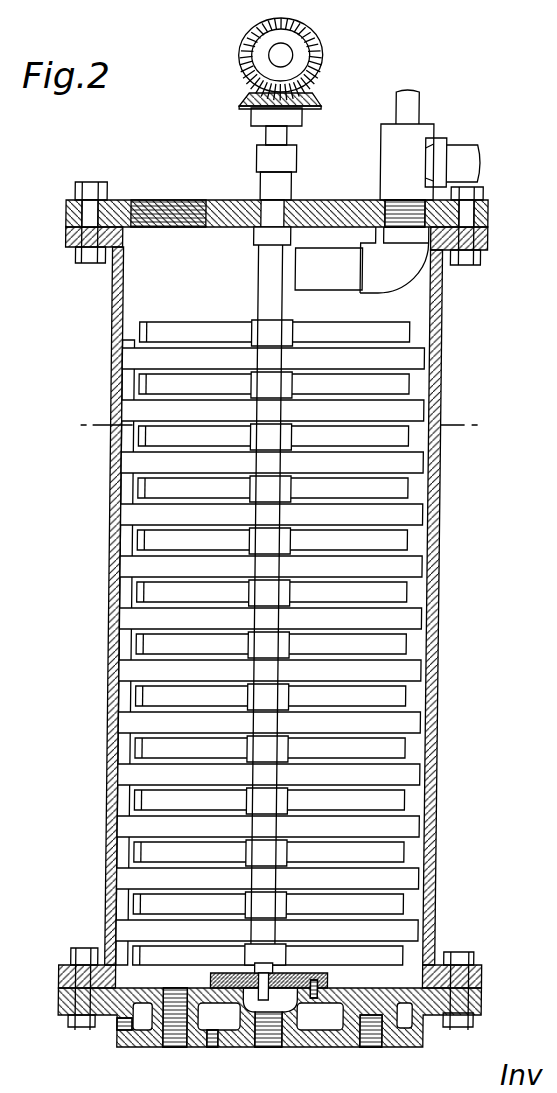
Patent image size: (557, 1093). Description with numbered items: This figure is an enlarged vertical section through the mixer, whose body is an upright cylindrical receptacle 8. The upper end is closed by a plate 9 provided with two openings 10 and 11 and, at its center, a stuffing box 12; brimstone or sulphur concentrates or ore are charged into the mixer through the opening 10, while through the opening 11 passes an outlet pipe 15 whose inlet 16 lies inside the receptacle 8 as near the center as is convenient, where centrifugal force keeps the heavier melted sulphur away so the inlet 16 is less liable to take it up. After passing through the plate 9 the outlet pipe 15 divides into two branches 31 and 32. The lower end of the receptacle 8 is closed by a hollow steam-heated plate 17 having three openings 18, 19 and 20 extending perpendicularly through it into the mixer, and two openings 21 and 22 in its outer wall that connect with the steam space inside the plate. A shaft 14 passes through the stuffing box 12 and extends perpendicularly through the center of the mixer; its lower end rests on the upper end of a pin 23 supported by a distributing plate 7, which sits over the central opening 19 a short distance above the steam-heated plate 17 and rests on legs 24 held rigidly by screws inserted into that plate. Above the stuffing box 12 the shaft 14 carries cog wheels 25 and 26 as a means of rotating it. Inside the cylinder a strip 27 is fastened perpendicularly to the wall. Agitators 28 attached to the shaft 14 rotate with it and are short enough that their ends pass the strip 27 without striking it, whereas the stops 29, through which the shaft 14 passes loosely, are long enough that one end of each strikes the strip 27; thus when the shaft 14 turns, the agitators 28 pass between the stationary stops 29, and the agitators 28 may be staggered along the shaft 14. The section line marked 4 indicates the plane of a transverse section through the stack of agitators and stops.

The section line 4- 4 is at (80, 433).
The distributing plate 7 is at (218, 978).
The cylindrical receptacle 8 is at (441, 305).
The plate 9 is at (488, 215).
The opening 10 is at (172, 200).
The opening 11 is at (396, 210).
The stuffing box 12 is at (276, 154).
The shaft 14 is at (272, 267).
The outlet pipe 15 is at (394, 260).
The inlet 16 is at (297, 268).
The steam-heated plate 17 is at (490, 997).
The opening 18 is at (186, 1029).
The central opening 19 is at (284, 1029).
The opening 20 is at (382, 1029).
The opening 21 is at (128, 1031).
The opening 22 is at (224, 1038).
The pin 23 is at (267, 971).
The legs 24 is at (325, 986).
The cog wheel 25 is at (319, 44).
The cog wheel 26 is at (320, 99).
The strip 27 is at (128, 385).
The agitators 28 is at (271, 642).
The stops 29 is at (270, 644).
The branch pipe 31 is at (409, 106).
The branch pipe 32 is at (462, 164).